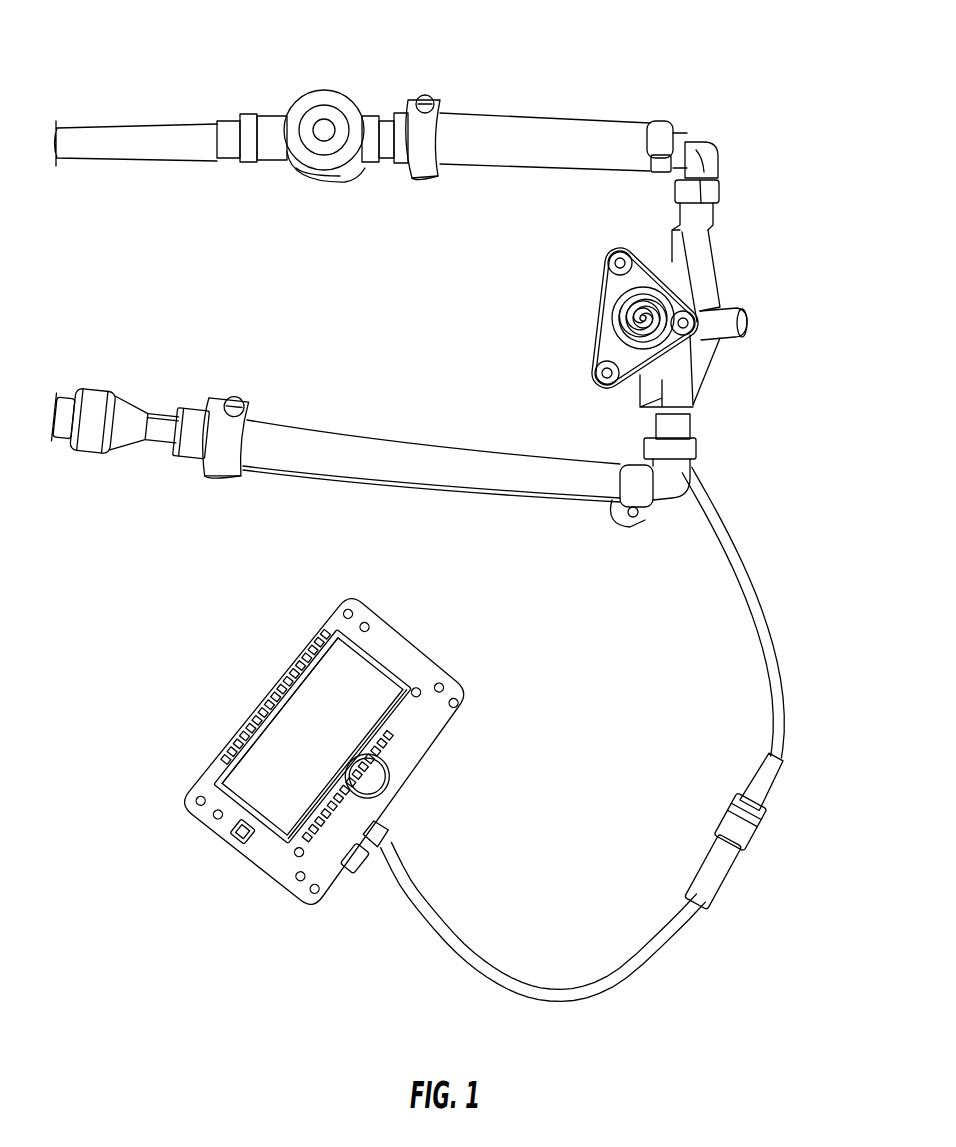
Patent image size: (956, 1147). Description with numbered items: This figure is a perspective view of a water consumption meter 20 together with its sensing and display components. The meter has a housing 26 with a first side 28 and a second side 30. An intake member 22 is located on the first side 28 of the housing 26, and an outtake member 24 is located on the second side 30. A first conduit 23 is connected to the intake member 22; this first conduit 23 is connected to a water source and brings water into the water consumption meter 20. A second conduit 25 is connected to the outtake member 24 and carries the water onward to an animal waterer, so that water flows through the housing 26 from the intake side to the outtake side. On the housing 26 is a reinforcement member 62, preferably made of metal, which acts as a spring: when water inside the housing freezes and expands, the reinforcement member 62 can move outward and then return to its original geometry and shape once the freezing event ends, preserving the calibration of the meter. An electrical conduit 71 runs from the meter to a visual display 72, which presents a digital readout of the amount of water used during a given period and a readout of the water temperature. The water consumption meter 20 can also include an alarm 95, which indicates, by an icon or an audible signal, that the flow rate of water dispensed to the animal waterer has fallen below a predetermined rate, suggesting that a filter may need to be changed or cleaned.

The water consumption meter 20 is at (628, 52).
The second conduit 25 is at (482, 135).
The outtake member 24 is at (712, 192).
The second side 30 is at (683, 216).
The housing 26 is at (706, 285).
The reinforcement member 62 is at (614, 302).
The first side 28 is at (648, 401).
The intake member 22 is at (683, 432).
The first conduit 23 is at (376, 466).
The electrical conduit 71 is at (751, 596).
The alarm 95 is at (398, 652).
The visual display 72 is at (282, 805).